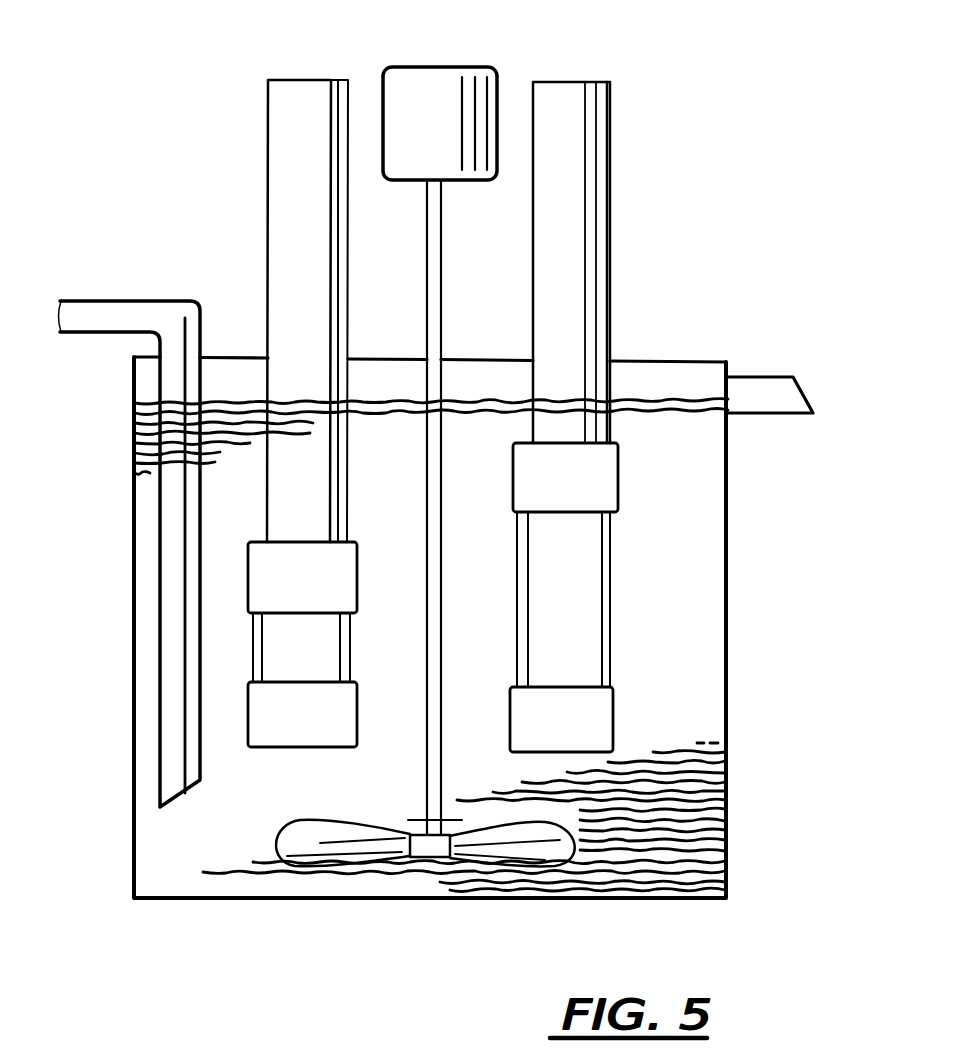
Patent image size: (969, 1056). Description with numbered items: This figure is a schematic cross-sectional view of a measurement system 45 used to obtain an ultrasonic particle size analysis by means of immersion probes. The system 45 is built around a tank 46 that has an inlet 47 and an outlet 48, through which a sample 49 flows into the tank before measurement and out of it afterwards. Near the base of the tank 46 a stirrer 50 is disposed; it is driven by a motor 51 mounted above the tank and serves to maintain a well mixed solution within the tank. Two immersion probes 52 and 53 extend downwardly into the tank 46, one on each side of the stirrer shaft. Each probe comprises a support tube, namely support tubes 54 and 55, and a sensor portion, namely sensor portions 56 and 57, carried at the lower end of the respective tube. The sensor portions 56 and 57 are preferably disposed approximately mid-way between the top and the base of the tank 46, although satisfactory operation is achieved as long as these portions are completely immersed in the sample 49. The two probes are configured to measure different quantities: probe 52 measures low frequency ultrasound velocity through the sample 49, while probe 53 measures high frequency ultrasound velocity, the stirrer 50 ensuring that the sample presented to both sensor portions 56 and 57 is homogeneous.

The measurement system 45 is at (687, 308).
The tank 46 is at (703, 772).
The inlet 47 is at (130, 320).
The outlet 48 is at (750, 395).
The sample 49 is at (708, 856).
The stirrer 50 is at (525, 855).
The motor 51 is at (430, 97).
The immersion probe 52 is at (618, 188).
The immersion probe 53 is at (263, 153).
The support tube 54 is at (570, 257).
The support tube 55 is at (287, 243).
The sensor portion 56 is at (603, 585).
The sensor portion 57 is at (260, 648).